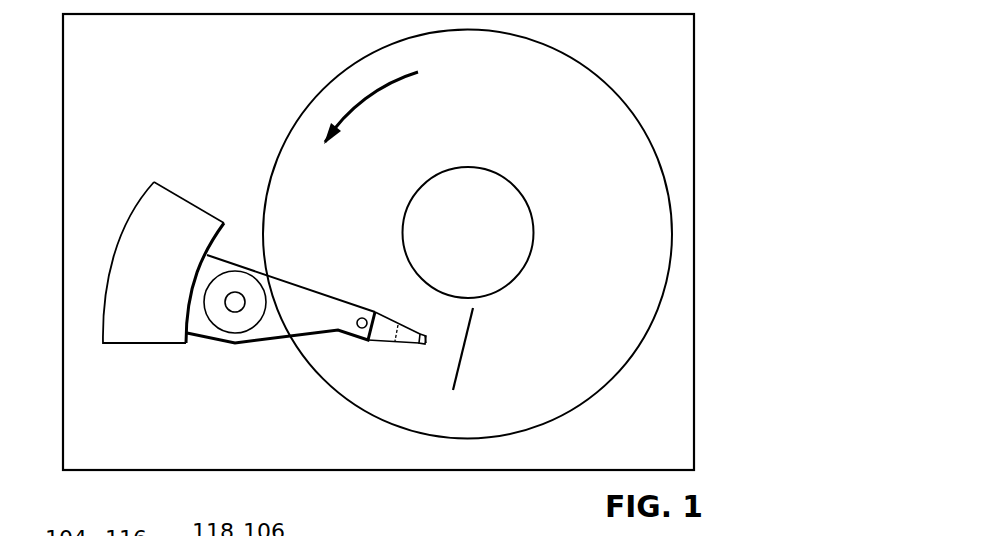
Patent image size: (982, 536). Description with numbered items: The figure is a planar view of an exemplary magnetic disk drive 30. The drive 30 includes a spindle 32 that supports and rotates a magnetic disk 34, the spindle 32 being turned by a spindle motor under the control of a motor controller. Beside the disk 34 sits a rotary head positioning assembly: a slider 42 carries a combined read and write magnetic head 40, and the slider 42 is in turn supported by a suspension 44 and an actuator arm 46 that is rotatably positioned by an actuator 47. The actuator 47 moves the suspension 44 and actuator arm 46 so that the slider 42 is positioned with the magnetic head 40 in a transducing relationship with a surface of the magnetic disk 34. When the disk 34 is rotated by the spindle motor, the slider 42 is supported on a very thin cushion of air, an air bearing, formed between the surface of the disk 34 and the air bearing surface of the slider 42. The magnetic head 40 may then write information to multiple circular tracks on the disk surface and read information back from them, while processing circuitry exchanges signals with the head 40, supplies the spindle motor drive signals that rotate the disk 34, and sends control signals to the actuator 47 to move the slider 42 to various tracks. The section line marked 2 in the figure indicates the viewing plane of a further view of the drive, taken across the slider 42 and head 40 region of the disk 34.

The magnetic disk drive 30 is at (708, 48).
The spindle 32 is at (504, 173).
The magnetic disk 34 is at (614, 253).
The magnetic head 40 is at (428, 346).
The slider 42 is at (426, 334).
The suspension 44 is at (383, 344).
The actuator arm 46 is at (325, 300).
The actuator 47 is at (197, 210).
The section line 2- 2 is at (475, 312).